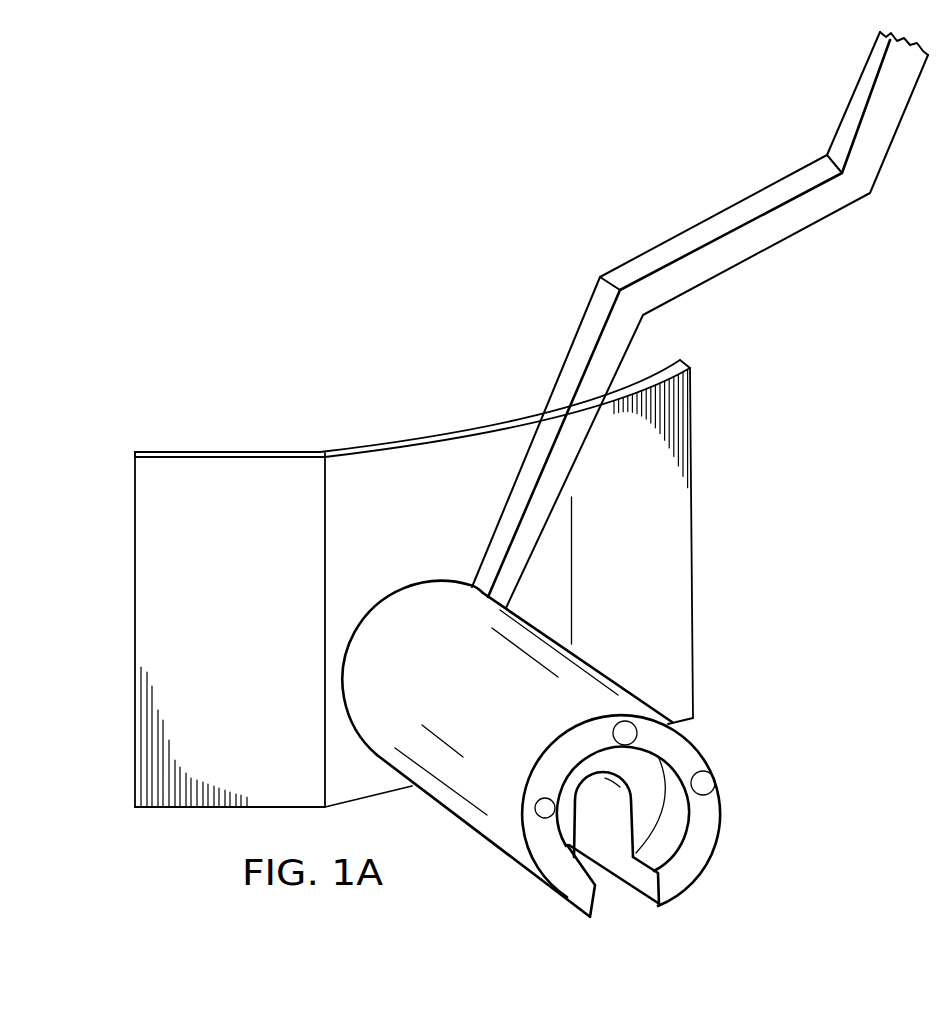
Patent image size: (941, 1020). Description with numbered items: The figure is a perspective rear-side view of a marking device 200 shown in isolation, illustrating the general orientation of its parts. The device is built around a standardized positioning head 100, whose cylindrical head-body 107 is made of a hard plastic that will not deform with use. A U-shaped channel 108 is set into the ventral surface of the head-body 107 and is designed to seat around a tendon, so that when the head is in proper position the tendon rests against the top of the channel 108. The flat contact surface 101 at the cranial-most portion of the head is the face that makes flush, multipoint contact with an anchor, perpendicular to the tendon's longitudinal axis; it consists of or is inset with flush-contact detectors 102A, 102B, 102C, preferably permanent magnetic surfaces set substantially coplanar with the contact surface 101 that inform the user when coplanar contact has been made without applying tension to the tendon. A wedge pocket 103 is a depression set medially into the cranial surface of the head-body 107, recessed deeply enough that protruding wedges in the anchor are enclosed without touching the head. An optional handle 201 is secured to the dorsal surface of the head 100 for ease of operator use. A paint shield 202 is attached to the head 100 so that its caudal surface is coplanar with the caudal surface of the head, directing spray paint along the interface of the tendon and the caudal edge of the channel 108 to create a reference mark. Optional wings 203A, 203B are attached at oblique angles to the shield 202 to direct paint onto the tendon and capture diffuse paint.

The standardized positioning head 100 is at (468, 861).
The contact surface 101 is at (700, 845).
The flush-contact detector 102A is at (545, 798).
The flush-contact detector 102B is at (635, 733).
The flush-contact detector 102C is at (714, 783).
The wedge pocket 103 is at (650, 808).
The head-body 107 is at (432, 607).
The channel 108 is at (615, 834).
The marking device 200 is at (209, 158).
The handle 201 is at (713, 213).
The paint shield 202 is at (432, 440).
The wing 203A is at (695, 521).
The wing 203B is at (135, 607).